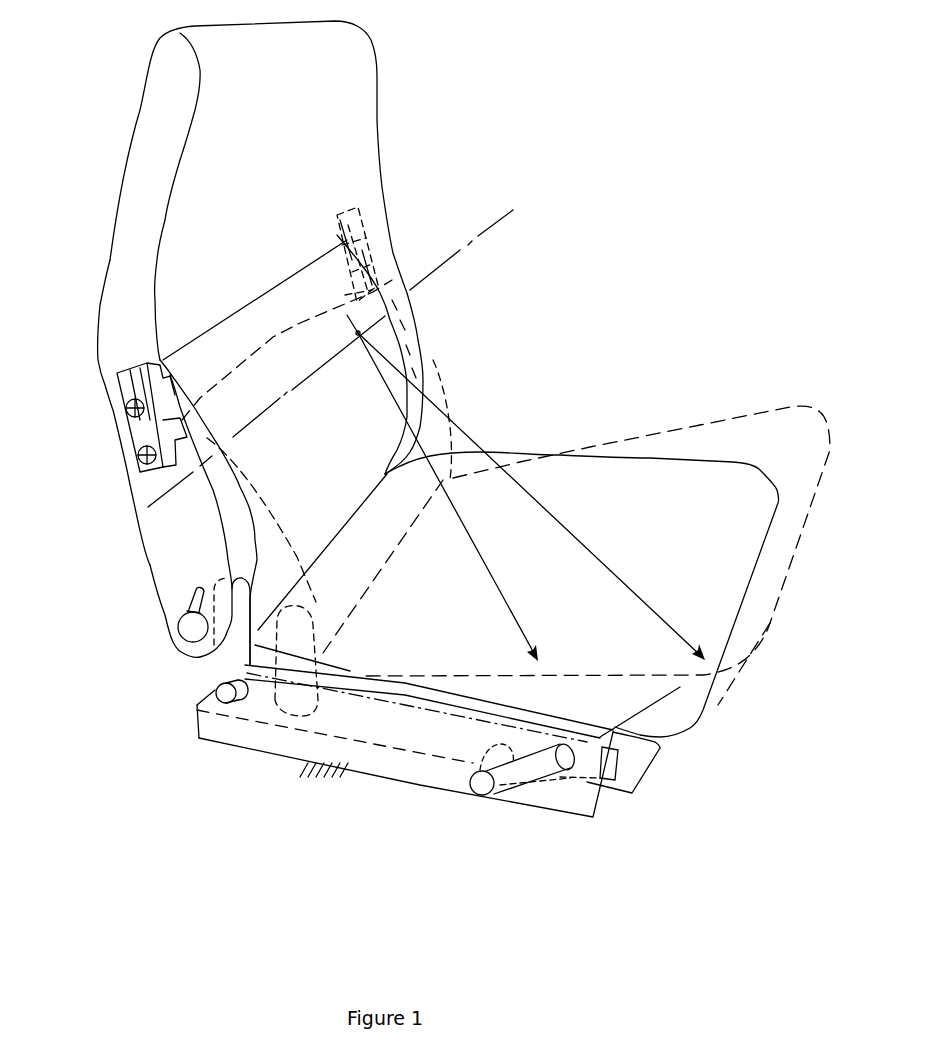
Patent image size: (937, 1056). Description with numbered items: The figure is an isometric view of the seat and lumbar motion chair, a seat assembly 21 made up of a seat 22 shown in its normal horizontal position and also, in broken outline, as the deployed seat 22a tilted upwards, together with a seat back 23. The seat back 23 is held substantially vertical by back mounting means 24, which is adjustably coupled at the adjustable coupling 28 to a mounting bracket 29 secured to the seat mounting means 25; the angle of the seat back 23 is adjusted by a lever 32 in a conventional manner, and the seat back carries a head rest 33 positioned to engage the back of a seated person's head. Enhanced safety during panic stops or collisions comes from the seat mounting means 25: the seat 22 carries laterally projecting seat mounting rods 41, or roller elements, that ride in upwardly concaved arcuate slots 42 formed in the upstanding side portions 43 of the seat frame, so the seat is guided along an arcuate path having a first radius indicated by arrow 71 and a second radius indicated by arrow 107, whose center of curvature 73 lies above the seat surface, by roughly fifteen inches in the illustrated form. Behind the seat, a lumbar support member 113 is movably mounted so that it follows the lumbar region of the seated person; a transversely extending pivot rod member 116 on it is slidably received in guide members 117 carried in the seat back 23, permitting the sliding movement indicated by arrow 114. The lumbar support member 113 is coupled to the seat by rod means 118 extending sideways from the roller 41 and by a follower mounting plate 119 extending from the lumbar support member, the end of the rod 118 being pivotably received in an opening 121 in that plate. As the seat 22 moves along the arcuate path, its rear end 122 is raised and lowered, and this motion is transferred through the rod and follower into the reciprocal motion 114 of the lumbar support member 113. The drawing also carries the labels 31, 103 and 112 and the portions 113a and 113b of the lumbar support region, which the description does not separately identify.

The seat assembly 21 is at (80, 242).
The seat 22 is at (672, 718).
The seat in deployed position 22a is at (760, 607).
The seat back 23 is at (115, 328).
The back mounting means 24 is at (130, 670).
The seat mounting means 25 is at (603, 816).
The adjustable coupling 28 is at (177, 627).
The mounting bracket 29 is at (210, 666).
The floor 31 is at (318, 790).
The lever 32 is at (188, 592).
The head rest 33 is at (160, 78).
The seat mounting rods 41 is at (235, 727).
The arcuate slot 42 is at (272, 712).
The upstanding side portions 43 is at (435, 765).
The arrow indicating first radius 71 is at (480, 558).
The center of curvature 73 is at (358, 337).
The latch bracket 103 is at (618, 766).
The arrow indicating second radius 107 is at (603, 562).
The base rail 112 is at (400, 788).
The lumbar support member 113 is at (243, 497).
The front portion of seat back side 113a is at (392, 342).
The rear portion of seat back side 113b is at (435, 383).
The arrow indicating sliding movement 114 is at (276, 341).
The pivot rod member 116 is at (128, 418).
The guide members 117 is at (345, 242).
The rod means 118 is at (225, 702).
The follower mounting plate 119 is at (215, 695).
The opening 121 is at (272, 710).
The rear end of the seat 122 is at (345, 525).